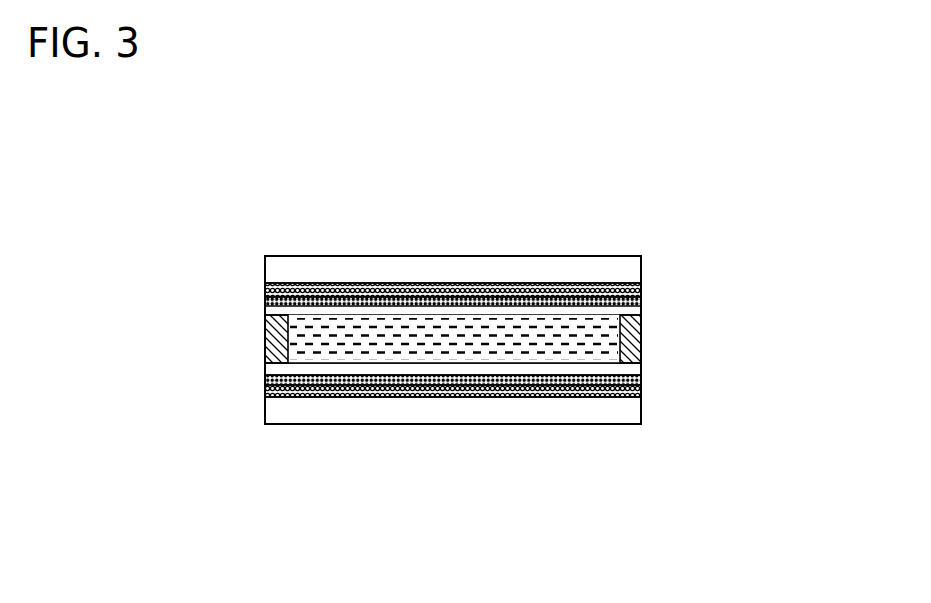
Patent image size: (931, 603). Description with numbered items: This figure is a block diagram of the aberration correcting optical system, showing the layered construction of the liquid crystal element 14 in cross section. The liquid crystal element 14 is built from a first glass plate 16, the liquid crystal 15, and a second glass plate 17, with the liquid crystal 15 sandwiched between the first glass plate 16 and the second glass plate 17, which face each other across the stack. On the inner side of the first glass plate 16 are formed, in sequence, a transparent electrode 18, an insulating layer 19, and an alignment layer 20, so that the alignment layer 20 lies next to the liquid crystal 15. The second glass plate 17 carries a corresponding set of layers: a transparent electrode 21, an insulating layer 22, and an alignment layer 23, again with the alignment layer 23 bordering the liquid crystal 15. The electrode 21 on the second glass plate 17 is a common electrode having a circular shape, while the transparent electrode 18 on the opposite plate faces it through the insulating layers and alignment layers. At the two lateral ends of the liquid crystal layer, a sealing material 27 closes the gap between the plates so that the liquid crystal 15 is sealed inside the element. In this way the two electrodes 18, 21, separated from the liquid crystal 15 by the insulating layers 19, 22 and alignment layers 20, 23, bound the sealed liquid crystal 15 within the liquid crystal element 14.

The liquid crystal element 14 is at (402, 256).
The liquid crystal 15 is at (465, 322).
The first glass plate 16 is at (623, 267).
The second glass plate 17 is at (440, 410).
The transparent electrode 18 is at (642, 285).
The insulating layer 19 is at (642, 305).
The alignment layer 20 is at (272, 312).
The transparent electrode 21 is at (316, 397).
The insulating layer 22 is at (529, 395).
The alignment layer 23 is at (615, 375).
The sealing material 27 is at (272, 362).